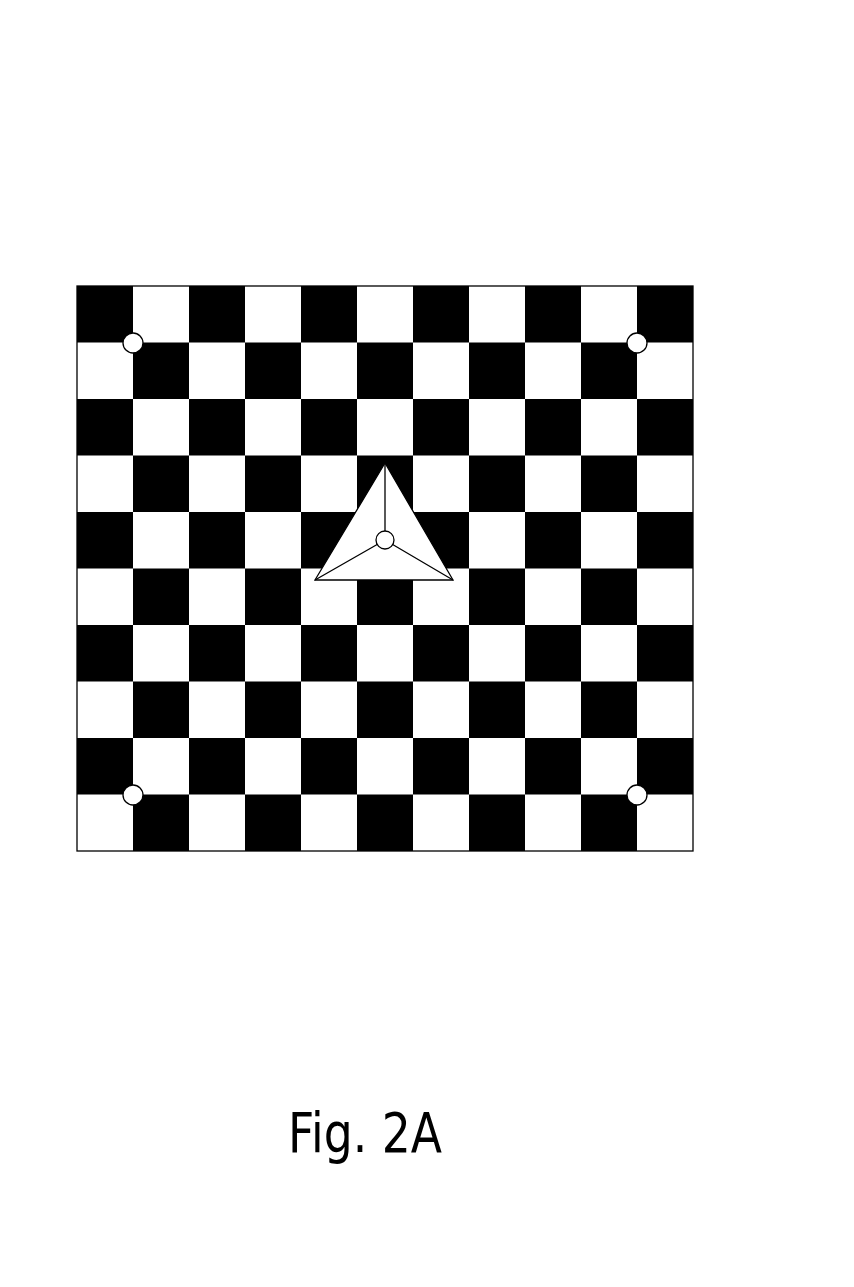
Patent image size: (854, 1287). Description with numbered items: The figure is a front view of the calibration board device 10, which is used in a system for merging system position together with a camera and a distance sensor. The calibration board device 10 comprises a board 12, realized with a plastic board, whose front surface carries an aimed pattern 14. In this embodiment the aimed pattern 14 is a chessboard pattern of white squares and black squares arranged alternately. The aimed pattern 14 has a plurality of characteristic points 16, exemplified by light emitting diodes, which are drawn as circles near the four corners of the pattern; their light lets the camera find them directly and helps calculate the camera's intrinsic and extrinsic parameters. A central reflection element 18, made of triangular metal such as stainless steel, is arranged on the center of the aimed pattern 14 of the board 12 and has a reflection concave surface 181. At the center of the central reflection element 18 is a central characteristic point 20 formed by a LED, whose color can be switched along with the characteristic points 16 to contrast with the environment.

The calibration board device 10 is at (438, 180).
The board 12 is at (247, 287).
The aimed pattern 14 is at (277, 773).
The characteristic points 16 is at (634, 336).
The central reflection element 18 is at (417, 510).
The reflection concave surface 181 is at (367, 517).
The central characteristic point 20 is at (469, 540).